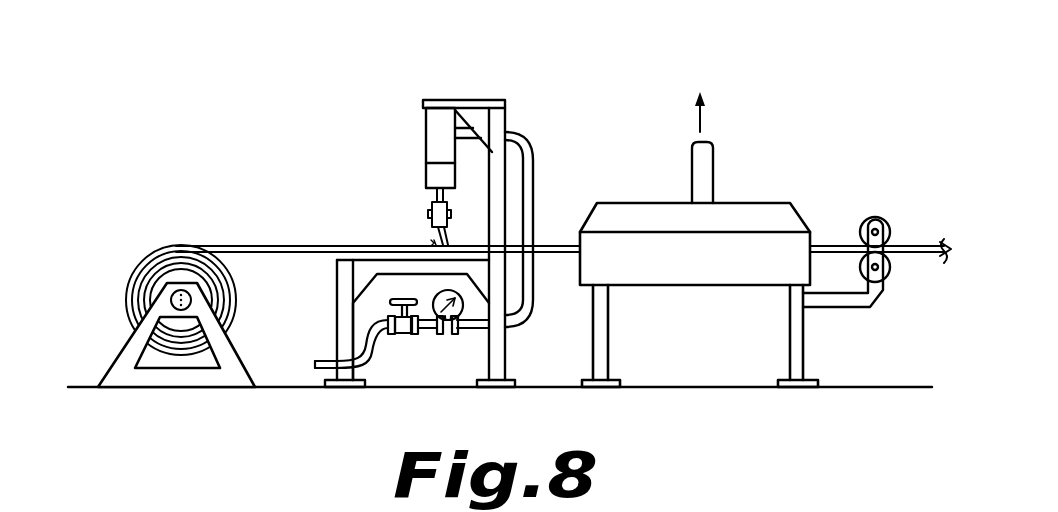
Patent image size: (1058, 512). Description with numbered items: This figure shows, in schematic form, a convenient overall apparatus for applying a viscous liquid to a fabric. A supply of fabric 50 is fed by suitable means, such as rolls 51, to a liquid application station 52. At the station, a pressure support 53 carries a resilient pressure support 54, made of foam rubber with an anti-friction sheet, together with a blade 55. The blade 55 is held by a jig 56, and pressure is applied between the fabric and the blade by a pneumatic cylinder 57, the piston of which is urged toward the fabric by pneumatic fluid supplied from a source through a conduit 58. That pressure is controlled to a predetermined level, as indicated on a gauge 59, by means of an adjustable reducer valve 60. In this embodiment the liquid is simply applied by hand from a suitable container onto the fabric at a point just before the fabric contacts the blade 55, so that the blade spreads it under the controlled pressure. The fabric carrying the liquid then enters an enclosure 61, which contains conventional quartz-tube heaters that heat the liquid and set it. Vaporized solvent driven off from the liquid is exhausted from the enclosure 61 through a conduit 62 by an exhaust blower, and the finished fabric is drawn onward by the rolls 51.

The supply of fabric 50 is at (217, 247).
The rolls 51 is at (883, 224).
The liquid application station 52 is at (419, 202).
The pressure support 53 is at (367, 272).
The resilient pressure support 54 is at (358, 258).
The blade 55 is at (437, 236).
The jig 56 is at (448, 215).
The pneumatic cylinder 57 is at (435, 123).
The conduit 58 is at (380, 363).
The gauge 59 is at (452, 334).
The adjustable reducer valve 60 is at (407, 333).
The enclosure 61 is at (783, 217).
The conduit 62 is at (703, 167).